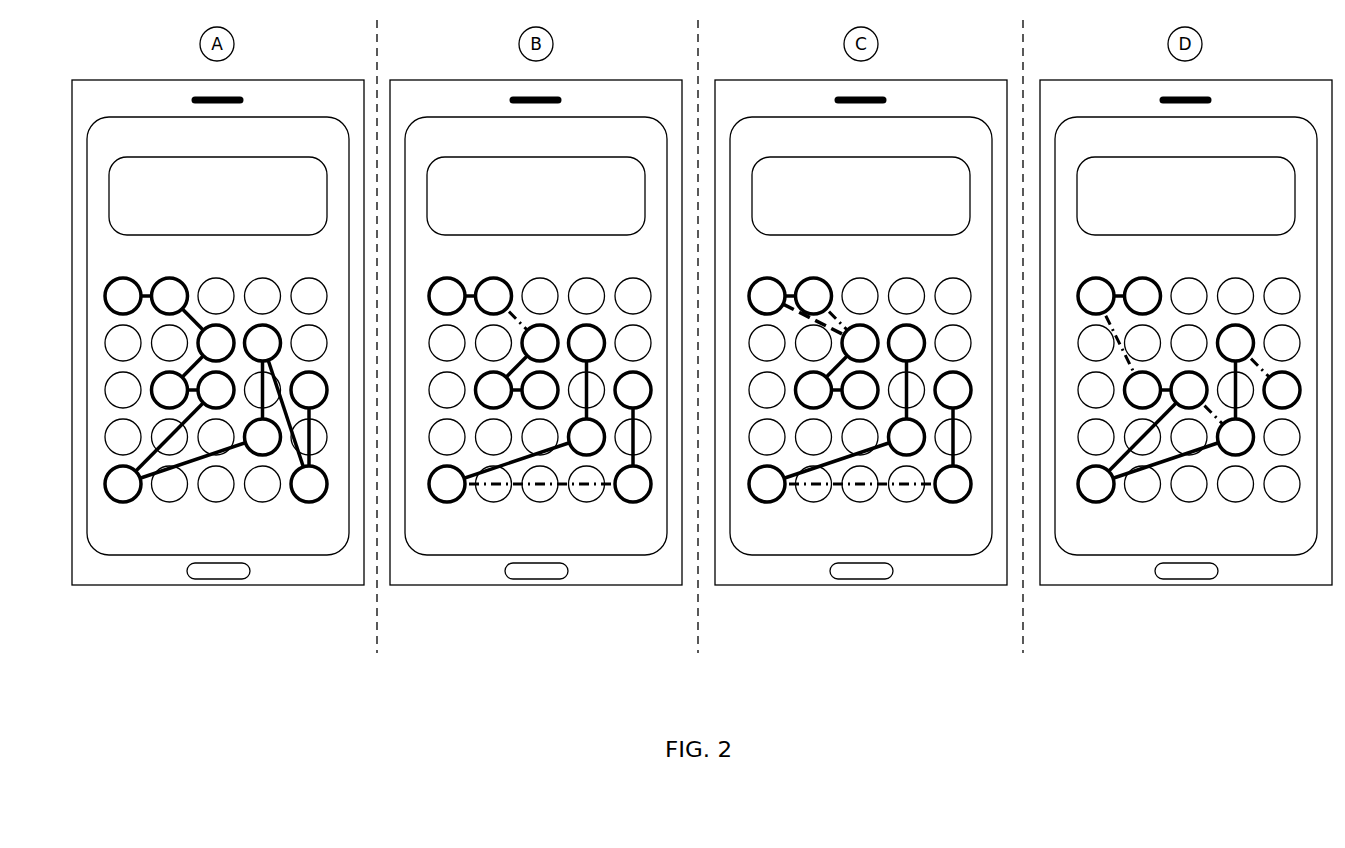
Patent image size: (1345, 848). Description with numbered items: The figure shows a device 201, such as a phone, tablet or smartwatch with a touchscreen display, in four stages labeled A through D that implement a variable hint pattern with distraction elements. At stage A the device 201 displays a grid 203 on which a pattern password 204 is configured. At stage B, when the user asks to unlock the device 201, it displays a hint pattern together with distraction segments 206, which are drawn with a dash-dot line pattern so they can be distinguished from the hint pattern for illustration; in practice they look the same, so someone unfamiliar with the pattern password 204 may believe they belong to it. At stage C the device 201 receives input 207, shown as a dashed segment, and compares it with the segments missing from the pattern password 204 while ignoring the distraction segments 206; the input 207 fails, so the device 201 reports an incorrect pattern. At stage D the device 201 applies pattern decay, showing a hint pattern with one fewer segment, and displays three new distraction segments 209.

The device 201 is at (104, 76).
The grid 203 is at (152, 271).
The pattern password 204 is at (150, 488).
The distraction segments 206 is at (575, 496).
The input 207 is at (805, 300).
The distraction segments 209 is at (1103, 317).